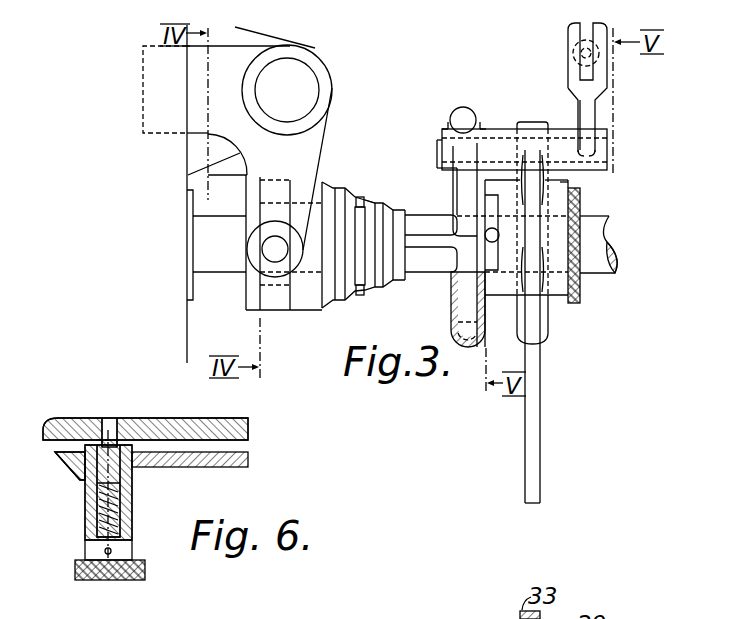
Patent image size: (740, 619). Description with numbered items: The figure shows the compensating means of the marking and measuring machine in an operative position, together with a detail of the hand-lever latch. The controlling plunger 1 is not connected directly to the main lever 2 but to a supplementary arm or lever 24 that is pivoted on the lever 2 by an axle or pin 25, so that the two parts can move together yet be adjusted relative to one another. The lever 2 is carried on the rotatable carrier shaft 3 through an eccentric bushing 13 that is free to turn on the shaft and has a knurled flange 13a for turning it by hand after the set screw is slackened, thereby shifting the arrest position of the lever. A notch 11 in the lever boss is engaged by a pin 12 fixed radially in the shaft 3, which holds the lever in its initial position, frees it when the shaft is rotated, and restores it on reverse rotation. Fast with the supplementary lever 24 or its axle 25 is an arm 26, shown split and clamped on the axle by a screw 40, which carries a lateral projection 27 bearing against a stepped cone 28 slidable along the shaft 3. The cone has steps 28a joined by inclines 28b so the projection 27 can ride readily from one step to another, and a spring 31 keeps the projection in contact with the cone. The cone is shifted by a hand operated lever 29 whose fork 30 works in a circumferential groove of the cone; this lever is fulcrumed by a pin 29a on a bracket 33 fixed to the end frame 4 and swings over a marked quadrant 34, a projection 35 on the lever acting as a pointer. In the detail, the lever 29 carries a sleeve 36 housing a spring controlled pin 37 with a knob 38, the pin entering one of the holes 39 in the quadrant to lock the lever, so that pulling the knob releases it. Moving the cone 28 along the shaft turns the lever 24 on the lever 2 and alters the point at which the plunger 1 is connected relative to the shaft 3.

In FIG. 3, the controlling plunger 1 is at (574, 57).
In FIG. 3, the lever 2 is at (558, 232).
In FIG. 3, the shaft 3 is at (603, 236).
In FIG. 3, the end frame 4 is at (183, 331).
In FIG. 3, the notch 11 is at (490, 262).
In FIG. 3, the pin 12 is at (499, 236).
In FIG. 3, the eccentric bushing 13 is at (487, 198).
In FIG. 3, the knurled flange 13a is at (581, 287).
In FIG. 3, the supplementary arm or lever 24 is at (590, 107).
In FIG. 3, the axle or pin 25 is at (570, 146).
In FIG. 3, the arm 26 is at (471, 257).
In FIG. 3, the lateral projection 27 is at (430, 238).
In FIG. 3, the stepped cone 28 is at (310, 305).
In FIG. 3, the step 28a is at (359, 196).
In FIG. 3, the incline 28b is at (371, 196).
In FIG. 3, the hand operated lever 29 is at (307, 165).
In FIG. 6, the hand operated lever 29 is at (244, 468).
In FIG. 3, the pin 29a is at (303, 82).
In FIG. 3, the fork 30 is at (280, 310).
In FIG. 3, the spring 31 is at (454, 306).
In FIG. 3, the bracket 33 is at (192, 153).
In FIG. 6, the bracket 33 is at (240, 420).
In FIG. 6, the quadrant 34 is at (57, 441).
In FIG. 6, the projection 35 is at (69, 466).
In FIG. 6, the sleeve 36 is at (130, 521).
In FIG. 6, the spring controlled pin 37 is at (110, 458).
In FIG. 6, the knob 38 is at (146, 572).
In FIG. 6, the hole 39 is at (108, 425).
In FIG. 3, the screw 40 is at (460, 115).